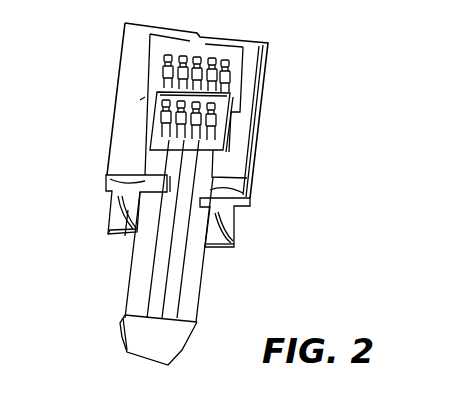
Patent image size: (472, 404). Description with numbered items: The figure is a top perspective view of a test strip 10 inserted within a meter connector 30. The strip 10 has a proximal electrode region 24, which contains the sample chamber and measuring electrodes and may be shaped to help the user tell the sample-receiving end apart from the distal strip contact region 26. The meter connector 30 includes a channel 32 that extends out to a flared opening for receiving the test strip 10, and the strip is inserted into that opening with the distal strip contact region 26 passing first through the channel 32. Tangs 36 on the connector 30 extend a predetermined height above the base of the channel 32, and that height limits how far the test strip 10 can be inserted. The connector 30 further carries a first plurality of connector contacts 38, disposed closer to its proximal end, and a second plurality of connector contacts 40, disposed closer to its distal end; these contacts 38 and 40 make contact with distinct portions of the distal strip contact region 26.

The test strip 10 is at (201, 268).
The proximal electrode region 24 is at (123, 338).
The distal strip contact region 26 is at (149, 94).
The meter connector 30 is at (261, 111).
The channel 32 is at (127, 238).
The tangs 36 is at (107, 176).
The first plurality of connector contacts 38 is at (215, 120).
The second plurality of connector contacts 40 is at (239, 73).